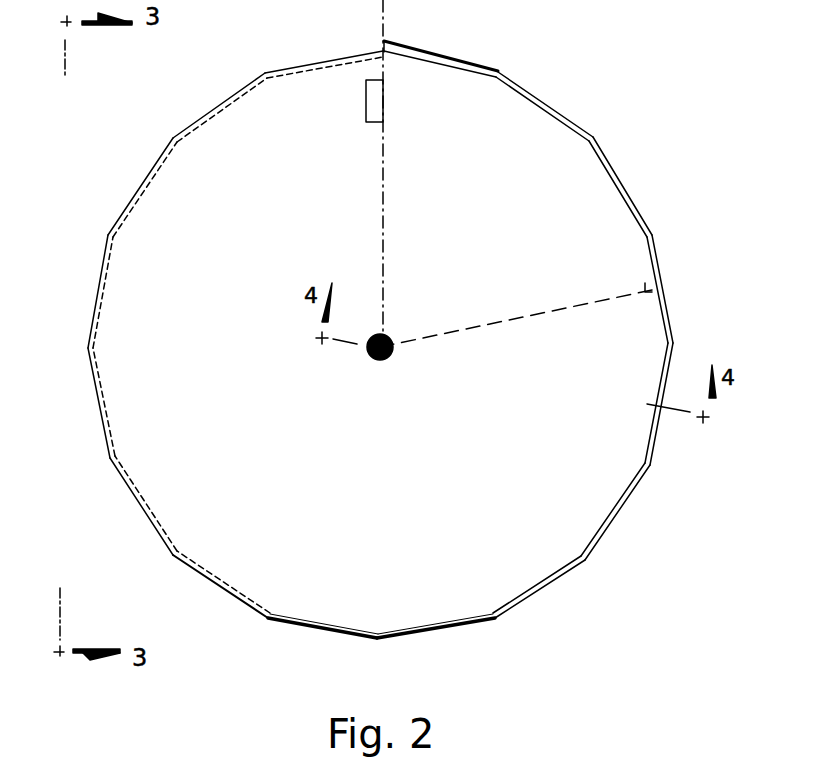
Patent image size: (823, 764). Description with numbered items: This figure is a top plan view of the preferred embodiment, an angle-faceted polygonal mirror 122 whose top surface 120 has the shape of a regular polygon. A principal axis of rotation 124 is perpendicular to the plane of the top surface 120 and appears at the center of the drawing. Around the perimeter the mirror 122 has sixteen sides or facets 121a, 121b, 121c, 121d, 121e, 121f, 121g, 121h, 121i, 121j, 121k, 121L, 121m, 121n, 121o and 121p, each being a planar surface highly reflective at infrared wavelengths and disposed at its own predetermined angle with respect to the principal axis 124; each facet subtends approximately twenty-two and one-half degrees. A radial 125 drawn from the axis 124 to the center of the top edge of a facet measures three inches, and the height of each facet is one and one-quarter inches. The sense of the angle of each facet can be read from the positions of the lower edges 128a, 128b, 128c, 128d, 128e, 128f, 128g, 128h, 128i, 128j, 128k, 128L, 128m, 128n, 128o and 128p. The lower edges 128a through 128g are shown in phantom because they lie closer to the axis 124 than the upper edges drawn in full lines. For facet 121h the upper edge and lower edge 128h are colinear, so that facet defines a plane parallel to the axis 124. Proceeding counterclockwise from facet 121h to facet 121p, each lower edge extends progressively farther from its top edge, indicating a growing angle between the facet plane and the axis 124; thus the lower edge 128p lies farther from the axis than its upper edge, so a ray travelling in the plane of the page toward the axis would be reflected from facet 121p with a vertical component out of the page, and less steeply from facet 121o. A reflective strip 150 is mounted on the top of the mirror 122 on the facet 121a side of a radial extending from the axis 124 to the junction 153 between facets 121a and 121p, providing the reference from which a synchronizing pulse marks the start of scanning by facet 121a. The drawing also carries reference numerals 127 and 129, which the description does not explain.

The top surface 120 is at (375, 488).
The facet 121a is at (318, 62).
The facet 121b is at (222, 104).
The facet 121c is at (152, 178).
The facet 121d is at (100, 280).
The facet 121e is at (102, 410).
The facet 121f is at (142, 514).
The facet 121g is at (228, 590).
The facet 121h is at (304, 625).
The facet 121i is at (437, 628).
The facet 121j is at (532, 592).
The facet 121k is at (608, 528).
The facet 121L is at (660, 425).
The facet 121m is at (700, 326).
The facet 121n is at (612, 172).
The facet 121o is at (548, 105).
The facet 121p is at (478, 42).
The lower edge 128a is at (345, 65).
The lower edge 128b is at (246, 99).
The lower edge 128c is at (140, 205).
The lower edge 128d is at (100, 302).
The lower edge 128e is at (105, 405).
The lower edge 128f is at (140, 502).
The lower edge 128g is at (250, 565).
The lower edge 128h is at (348, 632).
The lower edge 128i is at (468, 621).
The lower edge 128j is at (560, 580).
The lower edge 128k is at (622, 513).
The lower edge 128L is at (658, 446).
The lower edge 128m is at (662, 297).
The lower edge 128n is at (640, 210).
The lower edge 128o is at (578, 125).
The lower edge 128p is at (490, 63).
The mirror 122 is at (390, 660).
The principal axis of rotation 124 is at (388, 338).
The radial 125 is at (535, 316).
The central axis 127 is at (386, 218).
The panel edge 129 is at (650, 259).
The reflective strip 150 is at (372, 122).
The junction 153 is at (386, 44).